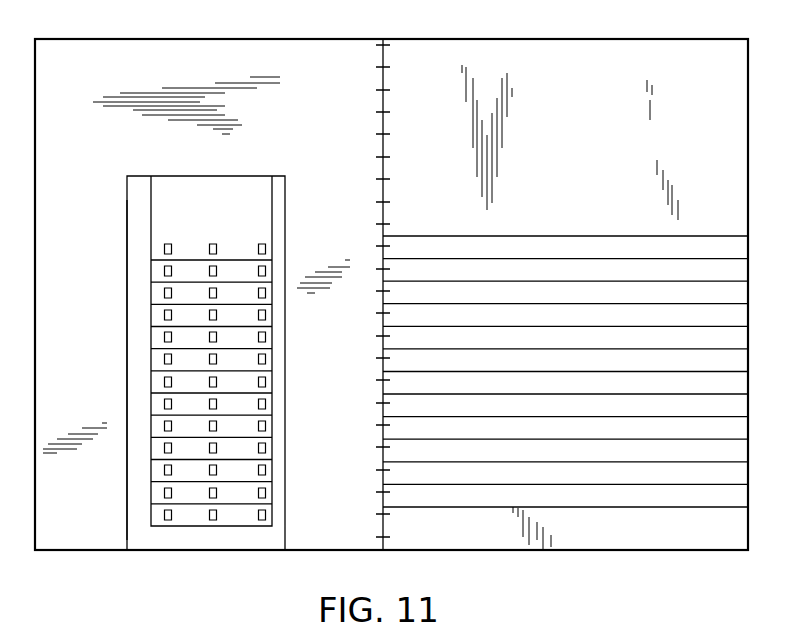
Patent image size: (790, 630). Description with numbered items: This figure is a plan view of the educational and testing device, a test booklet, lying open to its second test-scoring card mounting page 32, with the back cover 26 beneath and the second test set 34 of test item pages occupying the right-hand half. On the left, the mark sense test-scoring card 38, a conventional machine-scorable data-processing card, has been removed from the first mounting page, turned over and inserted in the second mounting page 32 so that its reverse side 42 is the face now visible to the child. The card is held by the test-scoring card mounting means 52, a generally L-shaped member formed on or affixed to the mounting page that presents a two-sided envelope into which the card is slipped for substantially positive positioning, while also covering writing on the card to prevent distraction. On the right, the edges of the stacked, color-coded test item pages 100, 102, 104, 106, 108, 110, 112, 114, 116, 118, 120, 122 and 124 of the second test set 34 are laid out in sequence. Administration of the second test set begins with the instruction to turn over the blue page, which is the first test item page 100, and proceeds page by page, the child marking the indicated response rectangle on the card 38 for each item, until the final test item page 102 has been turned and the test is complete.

The back cover 26 is at (610, 539).
The second test-scoring card mounting page 32 is at (193, 52).
The second test set of test item pages 34 is at (548, 50).
The mark sense test-scoring card 38 is at (238, 175).
The reverse side of the test-scoring card 42 is at (252, 420).
The test-scoring card mounting means 52 is at (137, 377).
The first test item page of the second test item set 100 is at (587, 229).
The final test item page of the second test item set 102 is at (607, 255).
The test item page 104 is at (619, 280).
The test item page 106 is at (636, 302).
The test item page 108 is at (614, 325).
The test item page 110 is at (624, 347).
The test item page 112 is at (636, 370).
The test item page 114 is at (622, 392).
The test item page 116 is at (635, 413).
The test item page 118 is at (646, 436).
The test item page 120 is at (626, 458).
The test item page 122 is at (647, 482).
The test item page 124 is at (664, 506).